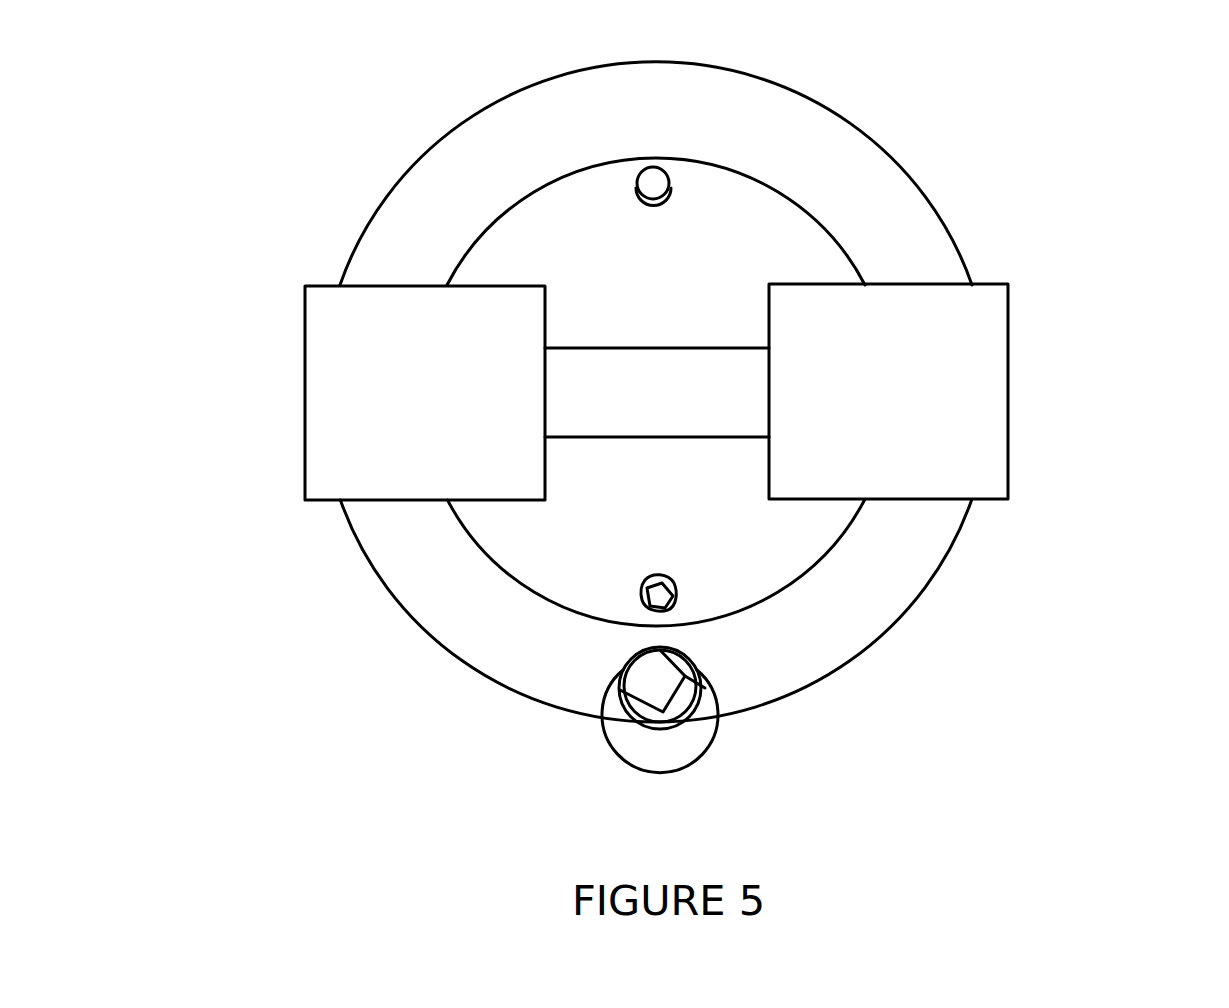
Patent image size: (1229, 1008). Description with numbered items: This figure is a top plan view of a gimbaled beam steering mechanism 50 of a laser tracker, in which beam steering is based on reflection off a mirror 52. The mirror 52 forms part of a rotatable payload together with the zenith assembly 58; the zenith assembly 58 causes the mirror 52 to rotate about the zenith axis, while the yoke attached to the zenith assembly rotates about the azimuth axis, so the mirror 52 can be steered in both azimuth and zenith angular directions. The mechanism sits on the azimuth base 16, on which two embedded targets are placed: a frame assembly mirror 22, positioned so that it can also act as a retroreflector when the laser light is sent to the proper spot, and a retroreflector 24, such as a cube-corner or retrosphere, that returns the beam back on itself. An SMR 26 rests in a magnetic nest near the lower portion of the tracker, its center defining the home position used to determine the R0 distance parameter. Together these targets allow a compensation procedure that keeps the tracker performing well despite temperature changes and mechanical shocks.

The azimuth base 16 is at (957, 239).
The mirror 22 is at (672, 192).
The retroreflector 24 is at (673, 599).
The SMR 26 is at (717, 690).
The gimbaled beam steering mechanism 50 is at (385, 92).
The mirror 52 is at (583, 422).
The zenith assembly 58 is at (1008, 392).